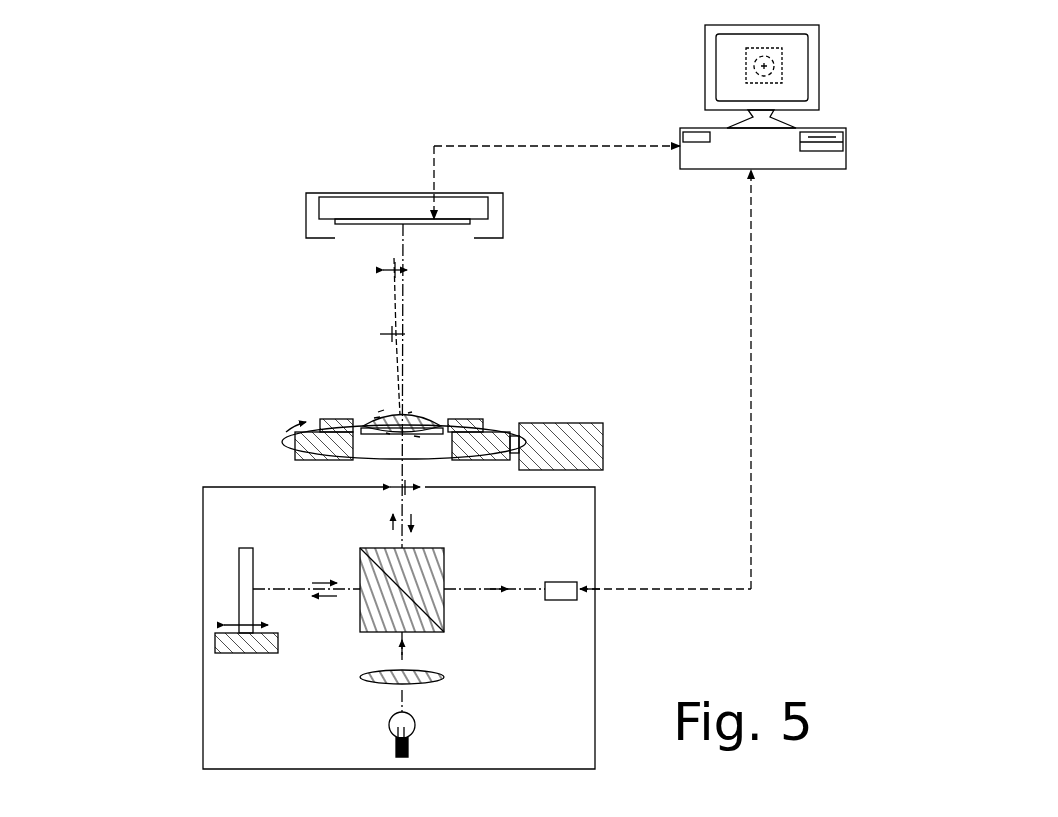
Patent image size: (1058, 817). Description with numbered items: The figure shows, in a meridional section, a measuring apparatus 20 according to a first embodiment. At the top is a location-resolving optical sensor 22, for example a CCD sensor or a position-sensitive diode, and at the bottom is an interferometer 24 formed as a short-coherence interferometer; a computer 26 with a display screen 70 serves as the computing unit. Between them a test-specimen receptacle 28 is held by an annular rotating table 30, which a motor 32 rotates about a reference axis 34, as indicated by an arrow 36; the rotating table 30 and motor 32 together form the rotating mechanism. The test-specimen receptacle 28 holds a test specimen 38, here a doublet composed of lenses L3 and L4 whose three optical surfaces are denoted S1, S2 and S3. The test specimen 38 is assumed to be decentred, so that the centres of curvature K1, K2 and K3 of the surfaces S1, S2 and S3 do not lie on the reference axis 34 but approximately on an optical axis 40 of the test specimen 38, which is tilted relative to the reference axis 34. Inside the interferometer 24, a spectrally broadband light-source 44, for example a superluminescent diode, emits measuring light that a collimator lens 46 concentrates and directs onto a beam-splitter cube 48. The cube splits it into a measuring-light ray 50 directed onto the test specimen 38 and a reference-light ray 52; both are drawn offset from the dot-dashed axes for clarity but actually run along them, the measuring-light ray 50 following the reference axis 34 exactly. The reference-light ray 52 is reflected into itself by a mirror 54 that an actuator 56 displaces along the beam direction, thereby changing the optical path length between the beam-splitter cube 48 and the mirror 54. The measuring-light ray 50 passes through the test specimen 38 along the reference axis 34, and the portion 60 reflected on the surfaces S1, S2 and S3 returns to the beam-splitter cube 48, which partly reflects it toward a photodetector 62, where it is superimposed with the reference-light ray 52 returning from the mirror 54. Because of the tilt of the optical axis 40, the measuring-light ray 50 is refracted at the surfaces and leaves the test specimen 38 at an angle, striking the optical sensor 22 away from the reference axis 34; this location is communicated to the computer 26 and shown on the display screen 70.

The measuring apparatus 20 is at (262, 220).
The location-resolving optical sensor 22 is at (342, 218).
The interferometer 24 is at (200, 582).
The computer 26 is at (720, 170).
The test-specimen receptacle 28 is at (460, 422).
The rotating table 30 is at (492, 432).
The motor 32 is at (556, 425).
The reference axis 34 is at (402, 305).
The arrow 36 is at (286, 428).
The test specimen 38 is at (372, 438).
The optical axis 40 is at (392, 305).
The light-source 44 is at (420, 725).
The collimator lens 46 is at (430, 672).
The beam-splitter cube 48 is at (444, 557).
The measuring-light ray 50 is at (393, 530).
The reference-light ray 52 is at (325, 599).
The mirror 54 is at (253, 565).
The actuator 56 is at (235, 653).
The reflected portion of the measuring-light ray 60 is at (412, 525).
The photodetector 62 is at (555, 582).
The display screen 70 is at (722, 71).
The centre of curvature K1 is at (415, 486).
The centre of curvature K2 is at (388, 334).
The centre of curvature K3 is at (388, 270).
The lens L3 is at (410, 413).
The lens L4 is at (388, 433).
The optical surface S1 is at (375, 418).
The optical surface S2 is at (380, 412).
The optical surface S3 is at (418, 437).